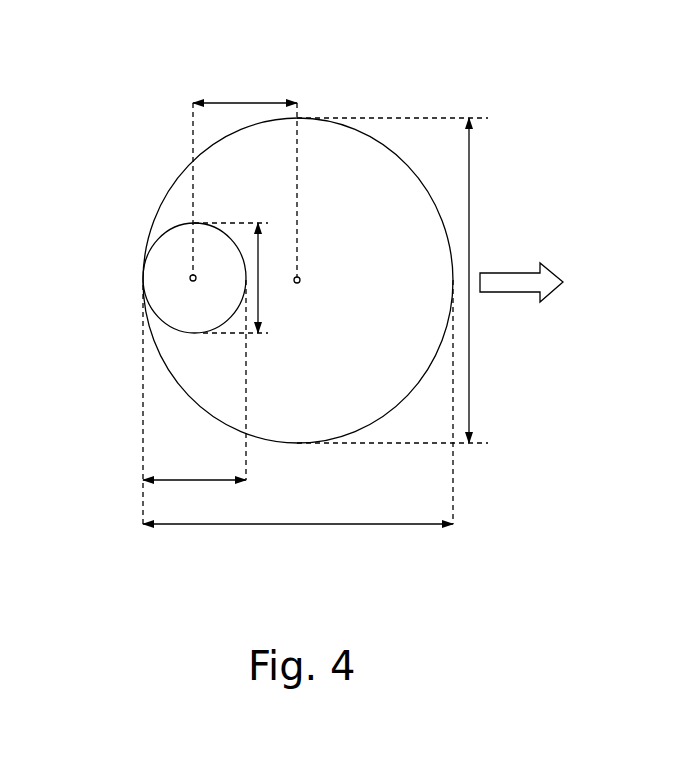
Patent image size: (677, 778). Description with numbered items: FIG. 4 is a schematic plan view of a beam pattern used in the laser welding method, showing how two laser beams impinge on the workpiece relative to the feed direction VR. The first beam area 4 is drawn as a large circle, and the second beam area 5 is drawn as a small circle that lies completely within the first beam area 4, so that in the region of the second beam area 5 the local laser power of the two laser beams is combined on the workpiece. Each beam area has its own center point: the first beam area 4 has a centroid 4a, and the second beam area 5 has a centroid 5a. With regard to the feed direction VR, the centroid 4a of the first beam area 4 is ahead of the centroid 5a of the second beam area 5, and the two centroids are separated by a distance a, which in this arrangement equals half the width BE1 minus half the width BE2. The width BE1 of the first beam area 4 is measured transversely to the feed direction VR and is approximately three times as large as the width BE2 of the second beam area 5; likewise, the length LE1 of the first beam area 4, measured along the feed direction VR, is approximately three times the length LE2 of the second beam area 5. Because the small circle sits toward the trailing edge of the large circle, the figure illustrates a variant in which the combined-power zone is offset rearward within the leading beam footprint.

The first beam area 4 is at (385, 192).
The centroid 4a is at (299, 276).
The second beam area 5 is at (170, 305).
The centroid 5a is at (191, 277).
The distance a is at (245, 91).
The length LE1 is at (401, 280).
The length LE2 is at (244, 278).
The width BE1 is at (298, 417).
The width BE2 is at (194, 402).
The feed direction VR is at (518, 280).